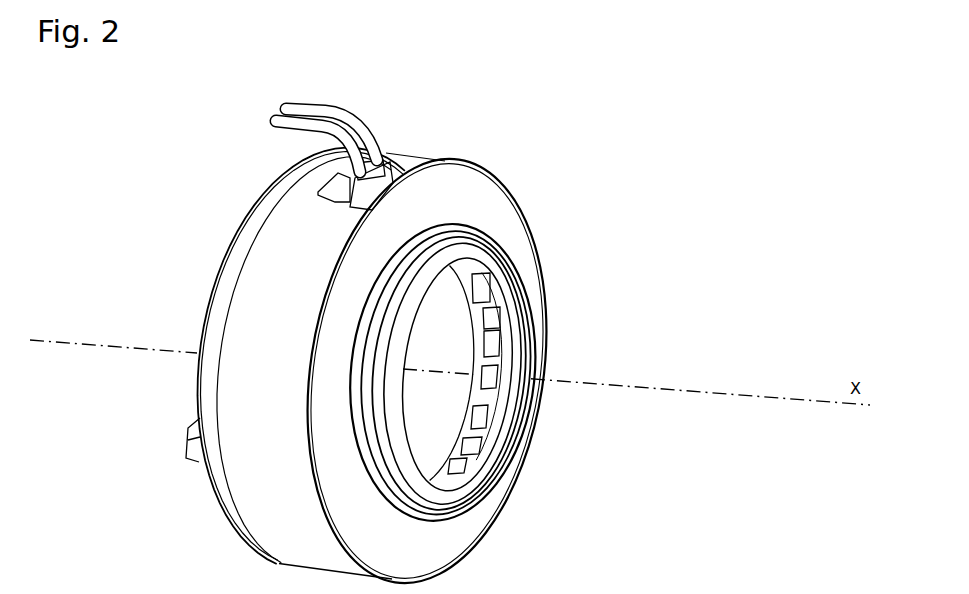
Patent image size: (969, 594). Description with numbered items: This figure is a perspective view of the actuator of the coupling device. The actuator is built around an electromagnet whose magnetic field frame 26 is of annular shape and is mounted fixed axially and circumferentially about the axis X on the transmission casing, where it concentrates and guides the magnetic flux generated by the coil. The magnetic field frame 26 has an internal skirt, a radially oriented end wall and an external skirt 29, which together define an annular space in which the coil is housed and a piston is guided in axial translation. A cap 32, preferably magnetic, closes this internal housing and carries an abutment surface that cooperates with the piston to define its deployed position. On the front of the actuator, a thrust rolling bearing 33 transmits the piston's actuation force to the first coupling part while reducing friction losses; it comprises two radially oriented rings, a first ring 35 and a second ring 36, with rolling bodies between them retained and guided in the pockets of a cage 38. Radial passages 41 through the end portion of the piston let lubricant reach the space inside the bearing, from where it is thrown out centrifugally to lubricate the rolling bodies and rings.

The magnetic field frame 26 is at (262, 270).
The external skirt 29 is at (250, 296).
The cap 32 is at (487, 210).
The thrust rolling bearing 33 is at (533, 320).
The first ring 35 is at (412, 243).
The second ring 36 is at (450, 225).
The cage 38 is at (432, 237).
The passages 41 is at (454, 460).